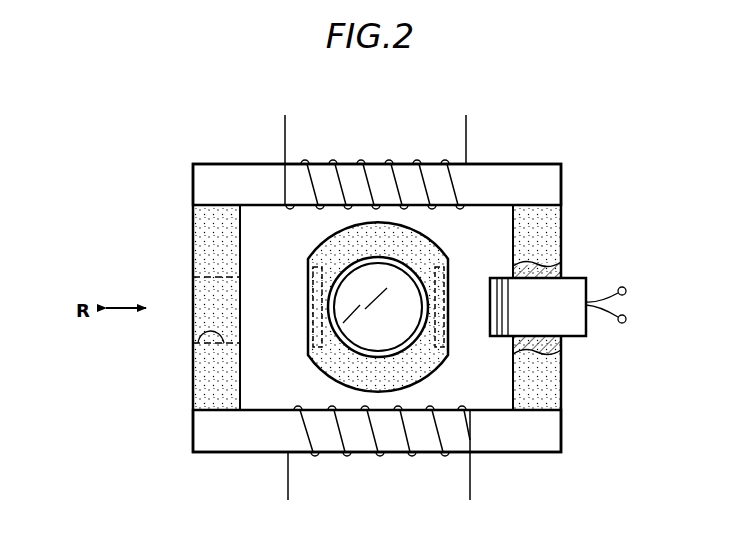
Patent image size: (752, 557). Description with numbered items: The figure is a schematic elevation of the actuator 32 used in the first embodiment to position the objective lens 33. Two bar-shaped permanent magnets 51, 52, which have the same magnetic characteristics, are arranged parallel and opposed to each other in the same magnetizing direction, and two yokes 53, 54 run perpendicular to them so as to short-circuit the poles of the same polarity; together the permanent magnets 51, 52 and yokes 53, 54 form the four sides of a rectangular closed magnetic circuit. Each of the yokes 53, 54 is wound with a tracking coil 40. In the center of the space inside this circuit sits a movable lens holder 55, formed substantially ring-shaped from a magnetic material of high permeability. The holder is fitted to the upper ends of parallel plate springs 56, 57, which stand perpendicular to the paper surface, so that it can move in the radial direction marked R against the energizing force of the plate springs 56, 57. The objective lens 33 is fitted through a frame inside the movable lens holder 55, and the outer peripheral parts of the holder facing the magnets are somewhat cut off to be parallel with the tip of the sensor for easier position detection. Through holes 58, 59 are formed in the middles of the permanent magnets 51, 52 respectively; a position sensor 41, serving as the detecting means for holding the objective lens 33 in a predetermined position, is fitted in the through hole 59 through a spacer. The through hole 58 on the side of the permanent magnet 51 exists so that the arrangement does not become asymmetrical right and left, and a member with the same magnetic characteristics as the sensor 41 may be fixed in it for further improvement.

The actuator 32 is at (268, 158).
The objective lens 33 is at (353, 333).
The tracking coils 40 is at (306, 163).
The position sensor 41 is at (575, 290).
The permanent magnet 51 is at (207, 245).
The permanent magnet 52 is at (562, 208).
The yoke 53 is at (488, 175).
The yoke 54 is at (520, 440).
The movable lens holder 55 is at (430, 250).
The plate spring 56 is at (313, 297).
The plate spring 57 is at (447, 297).
The through hole 58 is at (193, 335).
The through hole 59 is at (542, 334).